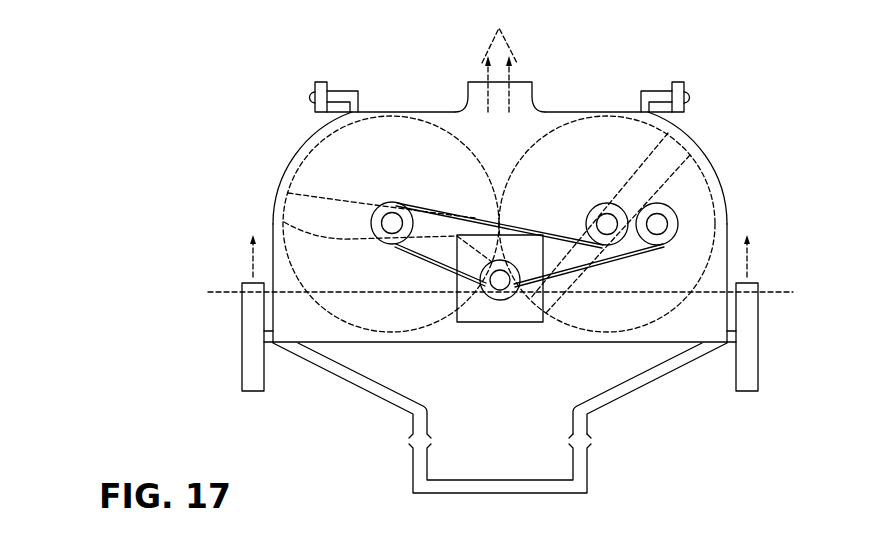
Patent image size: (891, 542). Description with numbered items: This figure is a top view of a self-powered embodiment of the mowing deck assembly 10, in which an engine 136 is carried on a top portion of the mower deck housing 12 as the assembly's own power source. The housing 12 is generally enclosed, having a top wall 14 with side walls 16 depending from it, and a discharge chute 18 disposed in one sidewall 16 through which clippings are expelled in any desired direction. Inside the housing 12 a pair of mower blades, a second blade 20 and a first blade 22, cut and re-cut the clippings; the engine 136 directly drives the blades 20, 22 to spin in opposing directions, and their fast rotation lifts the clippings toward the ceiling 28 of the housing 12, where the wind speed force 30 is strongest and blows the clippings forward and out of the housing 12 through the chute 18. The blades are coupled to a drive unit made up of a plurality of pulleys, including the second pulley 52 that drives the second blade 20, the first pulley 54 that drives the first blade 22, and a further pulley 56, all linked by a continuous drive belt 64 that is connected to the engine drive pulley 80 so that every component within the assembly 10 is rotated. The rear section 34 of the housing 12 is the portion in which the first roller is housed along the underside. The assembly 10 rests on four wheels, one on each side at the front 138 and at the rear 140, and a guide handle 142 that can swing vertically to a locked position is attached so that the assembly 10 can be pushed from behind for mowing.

The mowing deck assembly 10 is at (397, 80).
The mower deck housing 12 is at (284, 166).
The top wall 14 is at (282, 264).
The side walls 16 is at (280, 228).
The discharge chute 18 is at (528, 108).
The second blade 20 is at (302, 213).
The first blade 22 is at (670, 160).
The ceiling 28 is at (690, 320).
The wind speed force 30 is at (495, 50).
The rear section 34 is at (600, 343).
The second pulley 52 is at (380, 239).
The first pulley 54 is at (622, 210).
The pulley 56 is at (676, 221).
The continuous drive belt 64 is at (418, 256).
The engine drive pulley 80 is at (484, 295).
The engine 136 is at (514, 310).
The front wheel 138 is at (680, 86).
The rear wheel 140 is at (750, 347).
The guide handle 142 is at (623, 387).